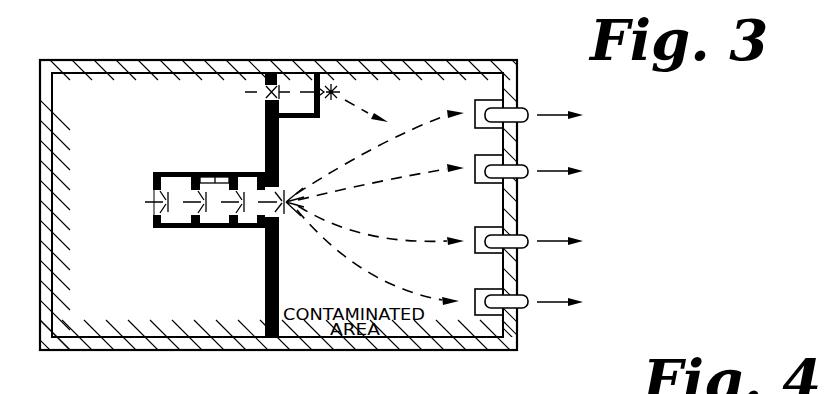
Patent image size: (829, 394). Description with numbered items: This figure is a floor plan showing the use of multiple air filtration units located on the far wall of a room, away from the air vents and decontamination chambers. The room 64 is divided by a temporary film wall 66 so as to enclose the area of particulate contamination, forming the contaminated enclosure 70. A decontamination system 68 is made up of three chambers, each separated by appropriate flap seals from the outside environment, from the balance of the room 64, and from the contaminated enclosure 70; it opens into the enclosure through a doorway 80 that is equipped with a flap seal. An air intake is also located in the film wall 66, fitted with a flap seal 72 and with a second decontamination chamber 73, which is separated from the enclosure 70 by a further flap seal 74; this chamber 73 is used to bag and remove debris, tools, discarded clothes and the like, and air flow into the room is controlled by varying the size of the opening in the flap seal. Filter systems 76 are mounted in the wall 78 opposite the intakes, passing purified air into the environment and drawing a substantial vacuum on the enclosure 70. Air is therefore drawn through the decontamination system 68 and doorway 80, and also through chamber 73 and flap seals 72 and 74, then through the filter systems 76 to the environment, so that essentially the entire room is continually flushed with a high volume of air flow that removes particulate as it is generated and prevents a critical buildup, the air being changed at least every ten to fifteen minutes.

The room 64 is at (171, 68).
The temporary film wall 66 is at (265, 266).
The decontamination system 68 is at (164, 229).
The contaminated enclosure 70 is at (430, 97).
The flap seal 72 is at (288, 86).
The second decontamination chamber 73 is at (310, 87).
The flap seal 74 is at (337, 90).
The filter systems 76 is at (500, 157).
The wall 78 is at (514, 205).
The doorway 80 is at (285, 215).